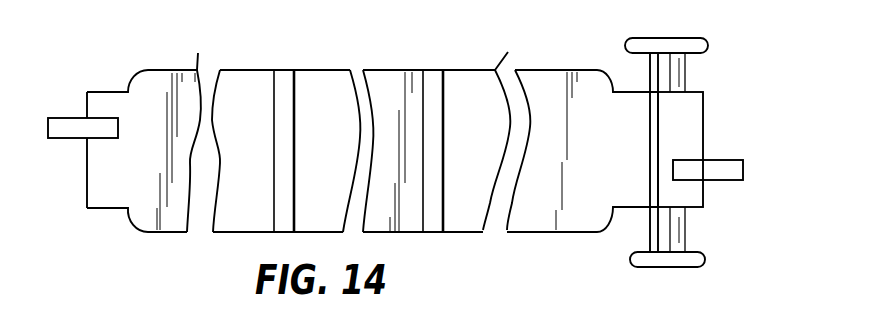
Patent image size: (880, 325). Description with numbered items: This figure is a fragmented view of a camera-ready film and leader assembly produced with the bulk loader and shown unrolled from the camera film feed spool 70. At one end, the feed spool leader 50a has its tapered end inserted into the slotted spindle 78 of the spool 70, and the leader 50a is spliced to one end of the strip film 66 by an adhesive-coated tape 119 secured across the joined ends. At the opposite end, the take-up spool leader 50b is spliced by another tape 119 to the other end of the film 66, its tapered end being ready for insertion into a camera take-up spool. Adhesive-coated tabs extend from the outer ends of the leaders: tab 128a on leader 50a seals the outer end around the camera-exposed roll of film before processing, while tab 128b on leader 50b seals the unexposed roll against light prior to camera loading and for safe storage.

The feed spool leader 50a is at (527, 77).
The take-up spool leader 50b is at (233, 87).
The strip film 66 is at (380, 78).
The adhesive-coated tape 119 is at (287, 77).
The tab 128a is at (727, 167).
The tab 128b is at (73, 134).
The slotted spindle 78 is at (678, 226).
The camera film feed spool 70 is at (697, 267).